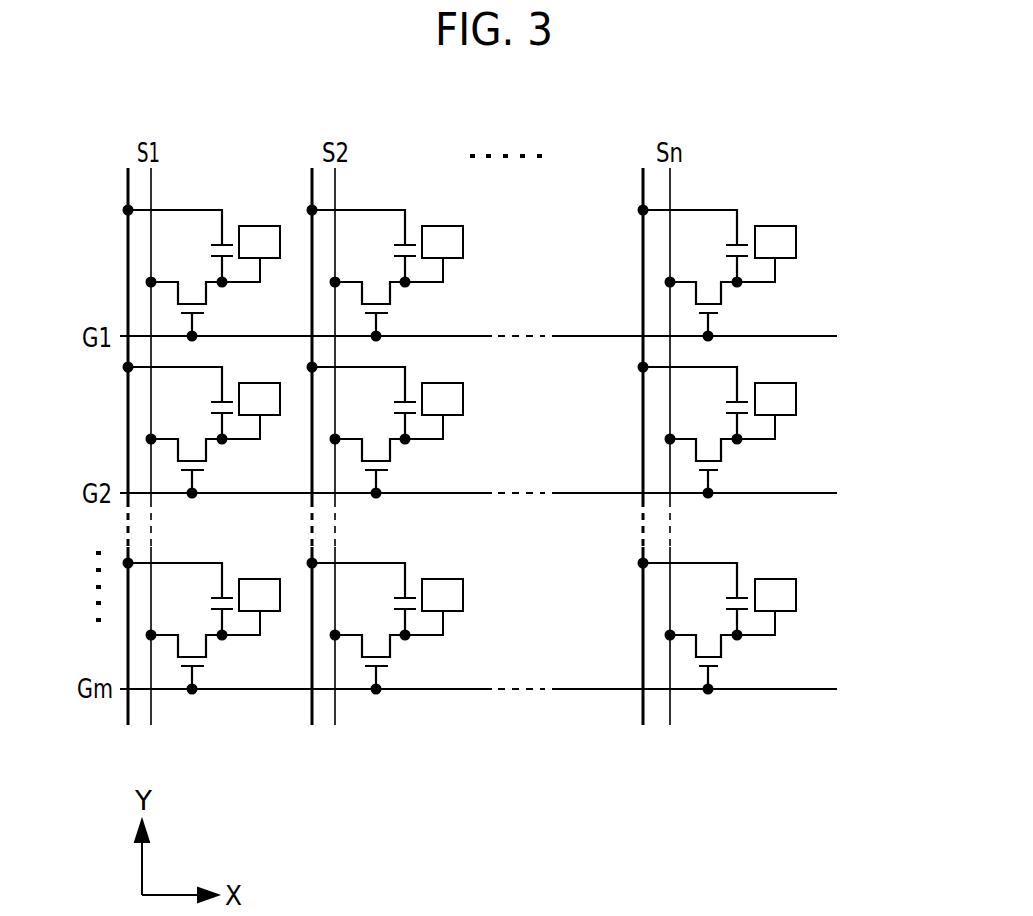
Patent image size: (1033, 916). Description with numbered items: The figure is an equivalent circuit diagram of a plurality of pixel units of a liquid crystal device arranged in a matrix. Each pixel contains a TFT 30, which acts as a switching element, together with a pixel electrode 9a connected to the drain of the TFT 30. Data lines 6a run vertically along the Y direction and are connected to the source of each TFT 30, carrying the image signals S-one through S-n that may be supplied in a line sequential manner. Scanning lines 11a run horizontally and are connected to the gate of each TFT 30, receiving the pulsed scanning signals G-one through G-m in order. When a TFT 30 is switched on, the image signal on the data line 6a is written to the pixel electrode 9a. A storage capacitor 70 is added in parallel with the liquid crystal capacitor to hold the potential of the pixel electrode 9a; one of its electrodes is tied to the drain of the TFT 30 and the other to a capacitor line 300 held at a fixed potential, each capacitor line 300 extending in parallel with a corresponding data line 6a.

The capacitor line 300 is at (128, 180).
The data line 6a is at (151, 183).
The storage capacitor 70 is at (211, 250).
The TFT 30 is at (185, 318).
The pixel electrode 9a is at (788, 242).
The scanning line 11a is at (822, 336).